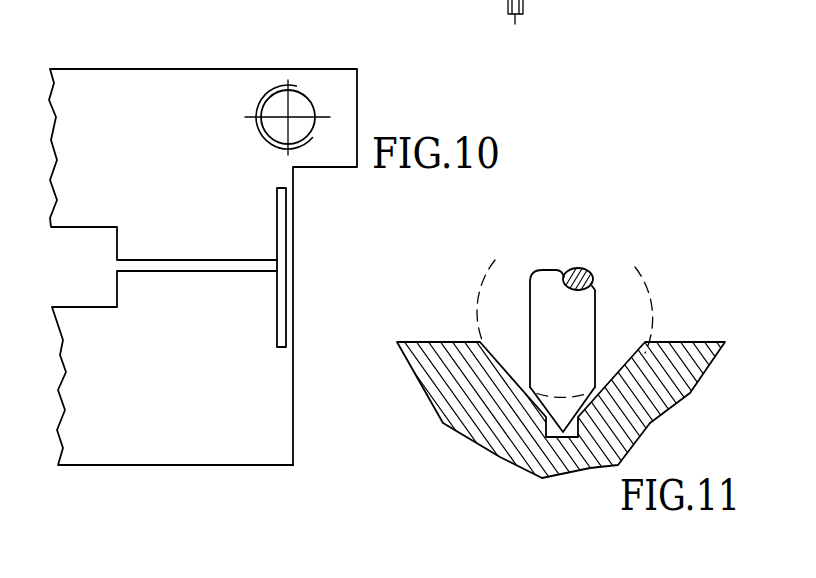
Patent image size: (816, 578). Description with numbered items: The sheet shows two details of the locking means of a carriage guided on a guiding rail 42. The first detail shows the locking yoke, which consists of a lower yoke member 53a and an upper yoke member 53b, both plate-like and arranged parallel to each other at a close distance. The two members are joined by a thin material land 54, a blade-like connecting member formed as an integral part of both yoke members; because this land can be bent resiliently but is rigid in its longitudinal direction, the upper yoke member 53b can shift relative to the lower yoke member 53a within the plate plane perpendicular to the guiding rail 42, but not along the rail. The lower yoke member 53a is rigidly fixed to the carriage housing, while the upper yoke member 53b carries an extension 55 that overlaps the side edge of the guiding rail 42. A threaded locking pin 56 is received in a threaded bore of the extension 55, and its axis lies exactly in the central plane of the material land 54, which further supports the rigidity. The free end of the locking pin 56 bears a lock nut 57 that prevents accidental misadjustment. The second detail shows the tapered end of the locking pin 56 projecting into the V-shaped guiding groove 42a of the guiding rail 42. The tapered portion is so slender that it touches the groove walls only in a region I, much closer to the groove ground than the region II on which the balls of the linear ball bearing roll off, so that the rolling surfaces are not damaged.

In FIG. 11, the guiding rail 42 is at (558, 391).
In FIG. 11, the V-shaped guiding groove 42a is at (620, 357).
In FIG. 10, the lower yoke member 53a is at (138, 418).
In FIG. 10, the upper yoke member 53b is at (130, 110).
In FIG. 10, the material land 54 is at (288, 267).
In FIG. 10, the extension 55 is at (343, 118).
In FIG. 10, the locking pin 56 is at (298, 108).
In FIG. 11, the locking pin 56 is at (582, 308).
In FIG. 10, the lock nut 57 is at (547, 0).
In FIG. 11, the region I is at (537, 410).
In FIG. 11, the region II is at (500, 368).